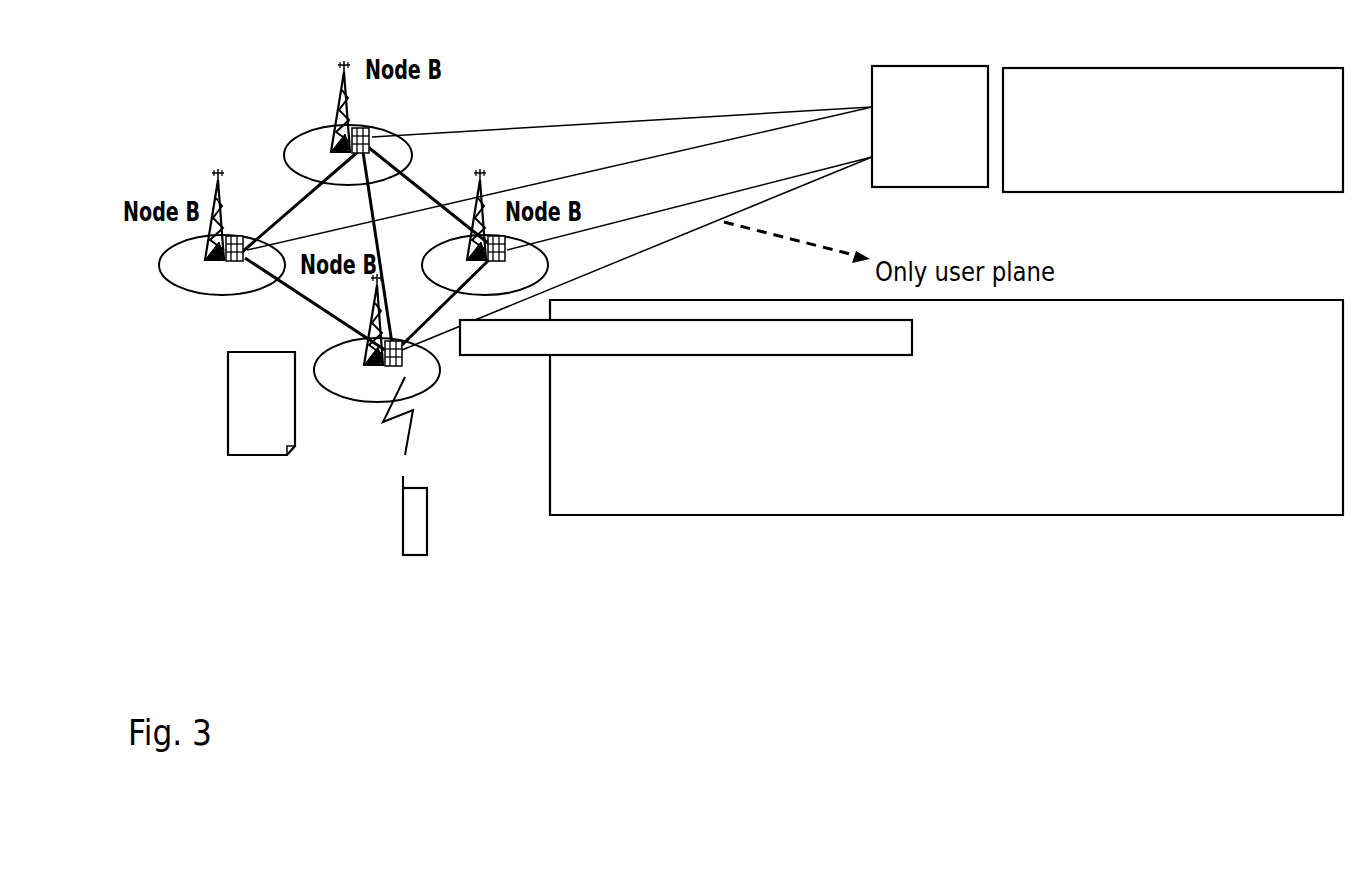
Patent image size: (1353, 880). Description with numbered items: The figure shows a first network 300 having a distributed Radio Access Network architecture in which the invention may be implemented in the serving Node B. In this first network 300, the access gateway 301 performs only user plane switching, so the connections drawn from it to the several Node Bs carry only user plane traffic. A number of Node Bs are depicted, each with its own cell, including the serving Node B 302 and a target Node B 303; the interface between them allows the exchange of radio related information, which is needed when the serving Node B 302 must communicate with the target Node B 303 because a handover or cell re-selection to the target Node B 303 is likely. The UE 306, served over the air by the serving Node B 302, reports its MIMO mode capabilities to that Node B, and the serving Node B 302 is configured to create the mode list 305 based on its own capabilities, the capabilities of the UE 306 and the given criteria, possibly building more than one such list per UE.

The first network 300 is at (946, 407).
The access gateway 301 is at (960, 100).
The serving Node B 302 is at (410, 338).
The target Node B 303 is at (525, 285).
The mode list 305 is at (365, 353).
The UE 306 is at (440, 466).